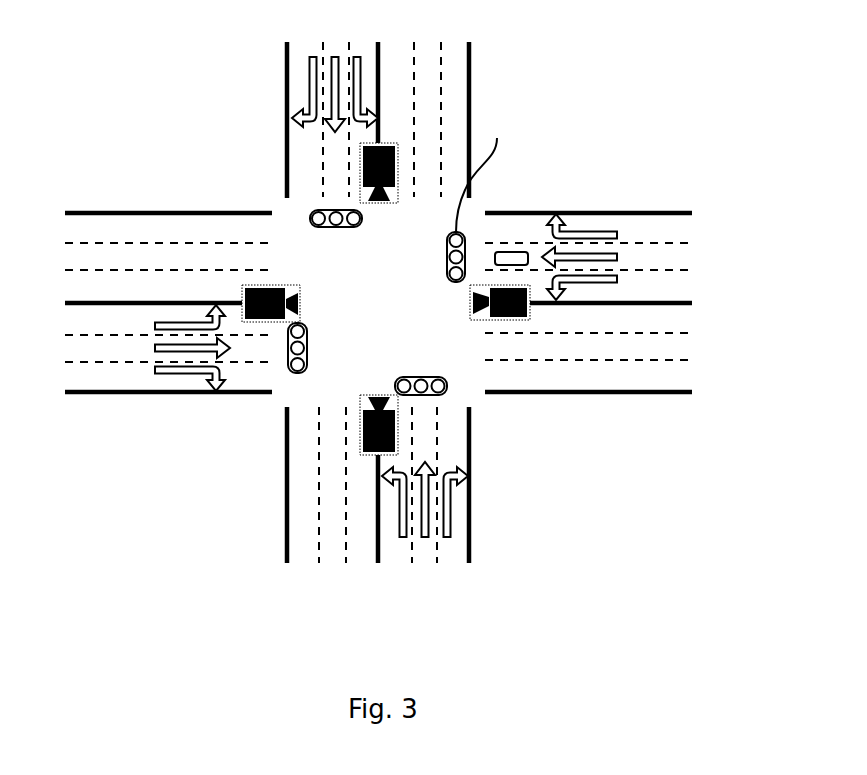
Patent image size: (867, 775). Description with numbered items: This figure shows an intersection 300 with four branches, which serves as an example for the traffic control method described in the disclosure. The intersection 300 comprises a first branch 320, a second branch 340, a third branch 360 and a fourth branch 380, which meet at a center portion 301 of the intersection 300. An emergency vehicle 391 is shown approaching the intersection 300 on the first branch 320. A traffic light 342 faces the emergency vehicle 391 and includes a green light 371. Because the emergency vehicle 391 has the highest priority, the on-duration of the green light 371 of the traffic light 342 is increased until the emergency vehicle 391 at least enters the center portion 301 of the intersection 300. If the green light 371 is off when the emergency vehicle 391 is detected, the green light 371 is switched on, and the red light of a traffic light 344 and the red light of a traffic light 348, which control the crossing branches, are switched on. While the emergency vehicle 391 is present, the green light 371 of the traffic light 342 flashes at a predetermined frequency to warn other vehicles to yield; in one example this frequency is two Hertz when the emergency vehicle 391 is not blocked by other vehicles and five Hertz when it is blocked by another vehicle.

The intersection 300 is at (709, 59).
The center portion 301 is at (390, 310).
The first branch 320 is at (669, 184).
The second branch 340 is at (261, 75).
The traffic light 342 is at (468, 212).
The traffic light 344 is at (292, 212).
The traffic light 348 is at (466, 390).
The third branch 360 is at (103, 420).
The green light 371 is at (492, 169).
The fourth branch 380 is at (498, 545).
The emergency vehicle 391 is at (512, 257).